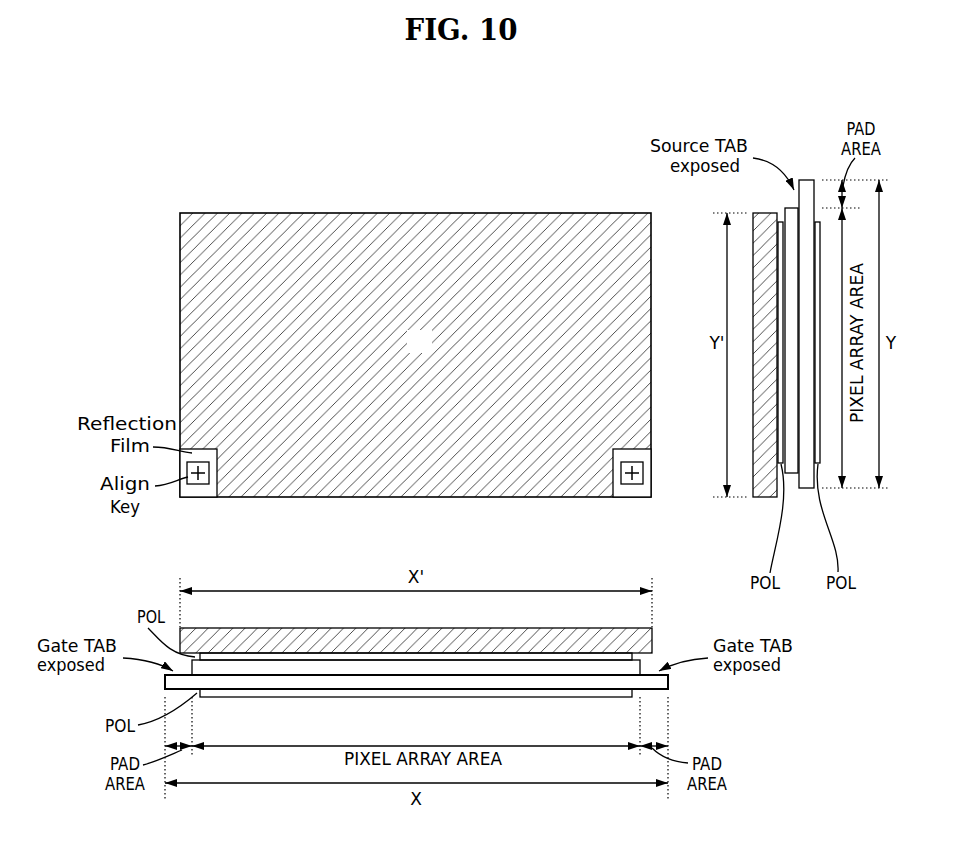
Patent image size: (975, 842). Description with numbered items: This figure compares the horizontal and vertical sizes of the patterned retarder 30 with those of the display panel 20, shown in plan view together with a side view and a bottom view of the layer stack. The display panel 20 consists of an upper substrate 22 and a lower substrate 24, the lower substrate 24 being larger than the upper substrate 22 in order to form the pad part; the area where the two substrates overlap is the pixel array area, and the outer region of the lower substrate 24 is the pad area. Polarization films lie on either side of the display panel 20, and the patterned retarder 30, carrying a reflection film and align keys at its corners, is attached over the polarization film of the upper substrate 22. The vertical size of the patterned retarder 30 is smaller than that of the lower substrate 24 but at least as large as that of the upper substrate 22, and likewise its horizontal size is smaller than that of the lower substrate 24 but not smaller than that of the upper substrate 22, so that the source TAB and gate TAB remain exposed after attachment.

The patterned retarder 30 is at (411, 350).
The display panel 20 is at (495, 457).
The upper substrate 22 is at (789, 475).
The lower substrate 24 is at (807, 490).